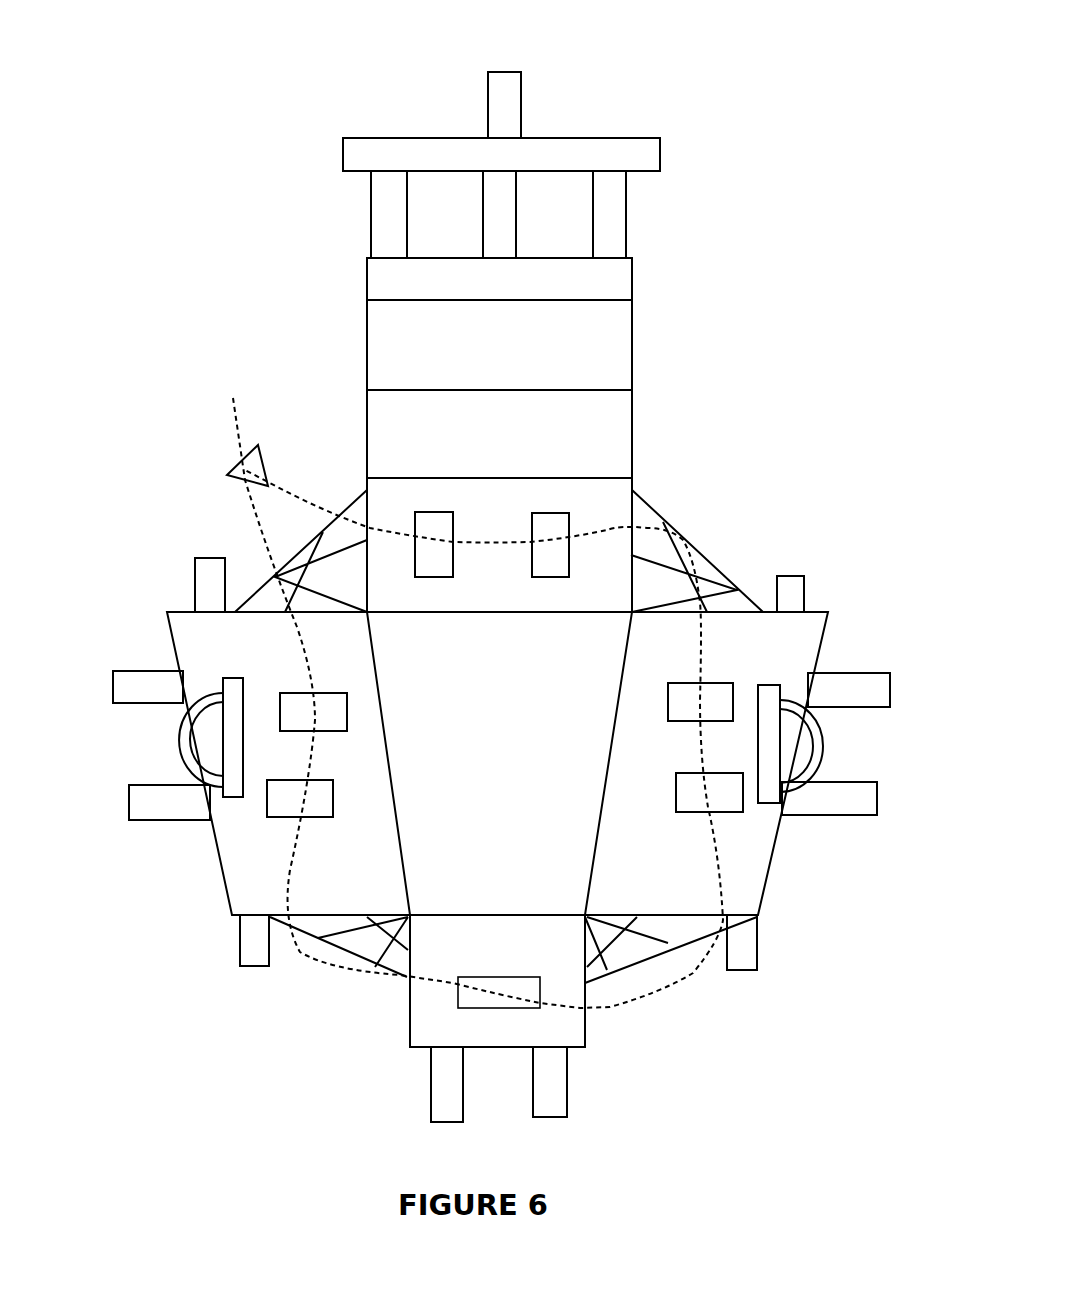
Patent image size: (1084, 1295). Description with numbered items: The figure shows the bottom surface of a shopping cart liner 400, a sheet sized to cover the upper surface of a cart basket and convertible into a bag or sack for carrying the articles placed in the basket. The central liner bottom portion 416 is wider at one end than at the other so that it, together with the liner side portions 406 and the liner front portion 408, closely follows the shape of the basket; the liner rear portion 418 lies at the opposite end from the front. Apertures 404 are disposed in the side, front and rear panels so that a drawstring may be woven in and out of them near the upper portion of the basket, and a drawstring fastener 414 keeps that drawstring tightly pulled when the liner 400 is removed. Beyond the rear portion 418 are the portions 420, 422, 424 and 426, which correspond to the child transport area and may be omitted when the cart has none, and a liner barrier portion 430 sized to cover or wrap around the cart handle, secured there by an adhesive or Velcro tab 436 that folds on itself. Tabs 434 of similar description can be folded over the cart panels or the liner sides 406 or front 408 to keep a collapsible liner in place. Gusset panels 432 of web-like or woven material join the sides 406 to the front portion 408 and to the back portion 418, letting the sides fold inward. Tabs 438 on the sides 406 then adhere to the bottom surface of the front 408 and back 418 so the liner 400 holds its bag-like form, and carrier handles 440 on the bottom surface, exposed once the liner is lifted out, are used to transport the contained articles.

The cart liner 400 is at (600, 102).
The apertures 404 is at (565, 533).
The liner side portions 406 is at (222, 650).
The liner front portion 408 is at (575, 1027).
The drawstring fastener 414 is at (237, 467).
The liner bottom portion 416 is at (473, 727).
The liner rear portion 418 is at (382, 488).
The liner portion 420 is at (379, 417).
The liner portion 422 is at (388, 363).
The liner portion 424 is at (378, 283).
The liner portion 426 is at (375, 215).
The liner barrier portion 430 is at (367, 160).
The gusset panels 432 is at (307, 567).
The tabs 434 is at (498, 110).
The tab 436 is at (163, 686).
The tabs 438 is at (213, 560).
The carrier handles 440 is at (186, 737).